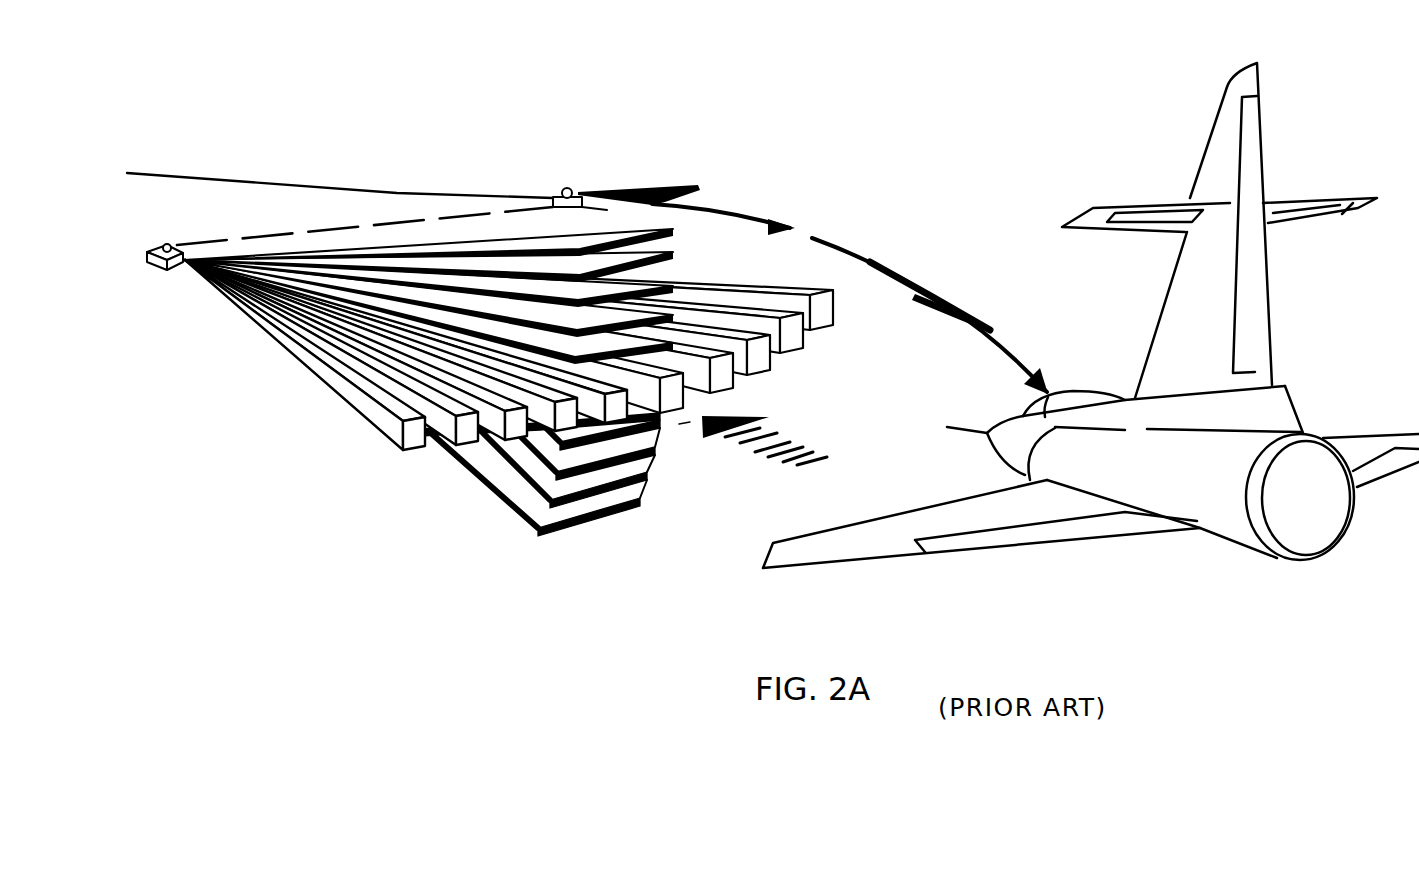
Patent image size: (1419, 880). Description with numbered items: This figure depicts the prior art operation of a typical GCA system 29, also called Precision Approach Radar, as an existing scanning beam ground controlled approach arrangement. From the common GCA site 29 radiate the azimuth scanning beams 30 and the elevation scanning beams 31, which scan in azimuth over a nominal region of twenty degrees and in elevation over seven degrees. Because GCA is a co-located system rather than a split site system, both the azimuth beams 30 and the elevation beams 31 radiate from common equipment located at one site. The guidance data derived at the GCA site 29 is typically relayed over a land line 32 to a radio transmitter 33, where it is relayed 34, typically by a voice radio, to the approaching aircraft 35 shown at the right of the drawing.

The GCA system 29 is at (147, 253).
The azimuth scanning beams 30 is at (371, 428).
The elevation scanning beams 31 is at (641, 502).
The land line 32 is at (343, 222).
The radio transmitter 33 is at (568, 190).
The relay 34 is at (878, 260).
The aircraft 35 is at (1217, 548).